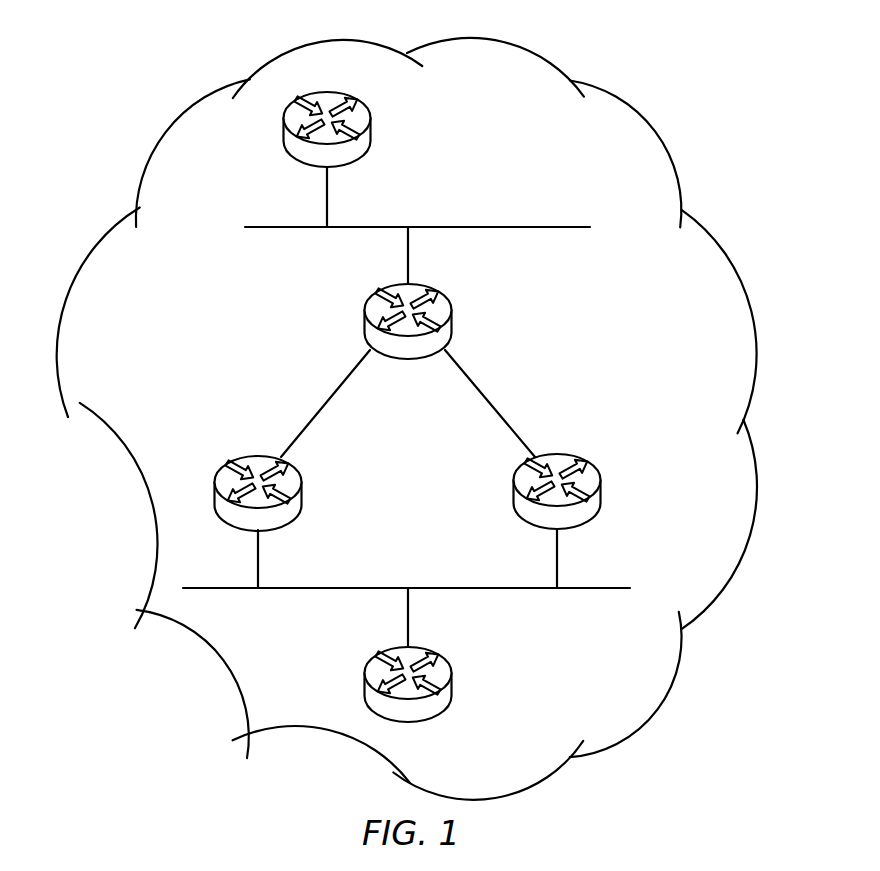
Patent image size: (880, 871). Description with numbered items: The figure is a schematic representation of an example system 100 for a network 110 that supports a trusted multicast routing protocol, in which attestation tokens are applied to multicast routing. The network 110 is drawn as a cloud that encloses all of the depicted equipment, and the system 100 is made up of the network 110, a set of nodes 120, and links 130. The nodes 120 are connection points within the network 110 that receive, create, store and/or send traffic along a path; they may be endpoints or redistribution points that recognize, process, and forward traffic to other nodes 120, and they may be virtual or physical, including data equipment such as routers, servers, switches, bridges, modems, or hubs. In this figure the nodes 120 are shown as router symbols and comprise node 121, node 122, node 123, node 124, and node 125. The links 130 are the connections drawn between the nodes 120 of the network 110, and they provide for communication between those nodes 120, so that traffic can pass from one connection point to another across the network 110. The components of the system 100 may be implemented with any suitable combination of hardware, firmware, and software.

The system 100 is at (634, 32).
The network 110 is at (204, 92).
The nodes 120 is at (407, 407).
The node 121 is at (215, 480).
The node 122 is at (601, 482).
The node 123 is at (452, 319).
The node 124 is at (371, 125).
The node 125 is at (365, 674).
The links 130 is at (492, 420).